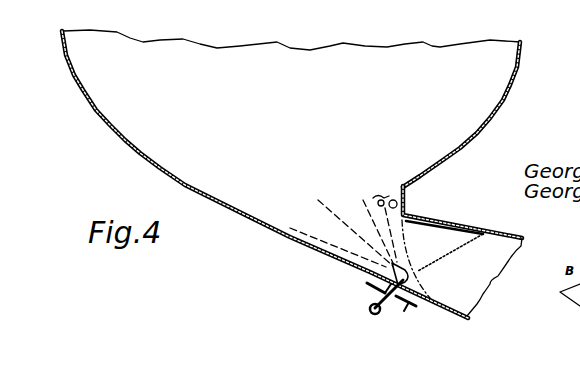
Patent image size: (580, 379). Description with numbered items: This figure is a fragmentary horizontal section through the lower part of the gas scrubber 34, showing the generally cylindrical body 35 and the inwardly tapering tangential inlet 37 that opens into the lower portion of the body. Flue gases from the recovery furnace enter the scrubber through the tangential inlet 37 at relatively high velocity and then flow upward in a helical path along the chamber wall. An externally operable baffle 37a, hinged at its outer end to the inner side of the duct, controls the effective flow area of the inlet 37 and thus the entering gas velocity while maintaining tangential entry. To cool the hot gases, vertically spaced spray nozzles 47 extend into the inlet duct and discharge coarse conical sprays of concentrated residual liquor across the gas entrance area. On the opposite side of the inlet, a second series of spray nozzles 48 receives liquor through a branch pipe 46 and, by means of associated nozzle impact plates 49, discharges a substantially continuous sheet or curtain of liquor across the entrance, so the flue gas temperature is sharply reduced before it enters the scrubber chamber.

The gas scrubber 34 is at (298, 85).
The cylindrical body 35 is at (519, 60).
The tangential inlet 37 is at (478, 285).
The baffle 37a is at (472, 236).
The branch pipe 46 is at (406, 200).
The spray nozzles 47 is at (393, 270).
The spray nozzles 48 is at (391, 196).
The nozzle impact plates 49 is at (372, 200).